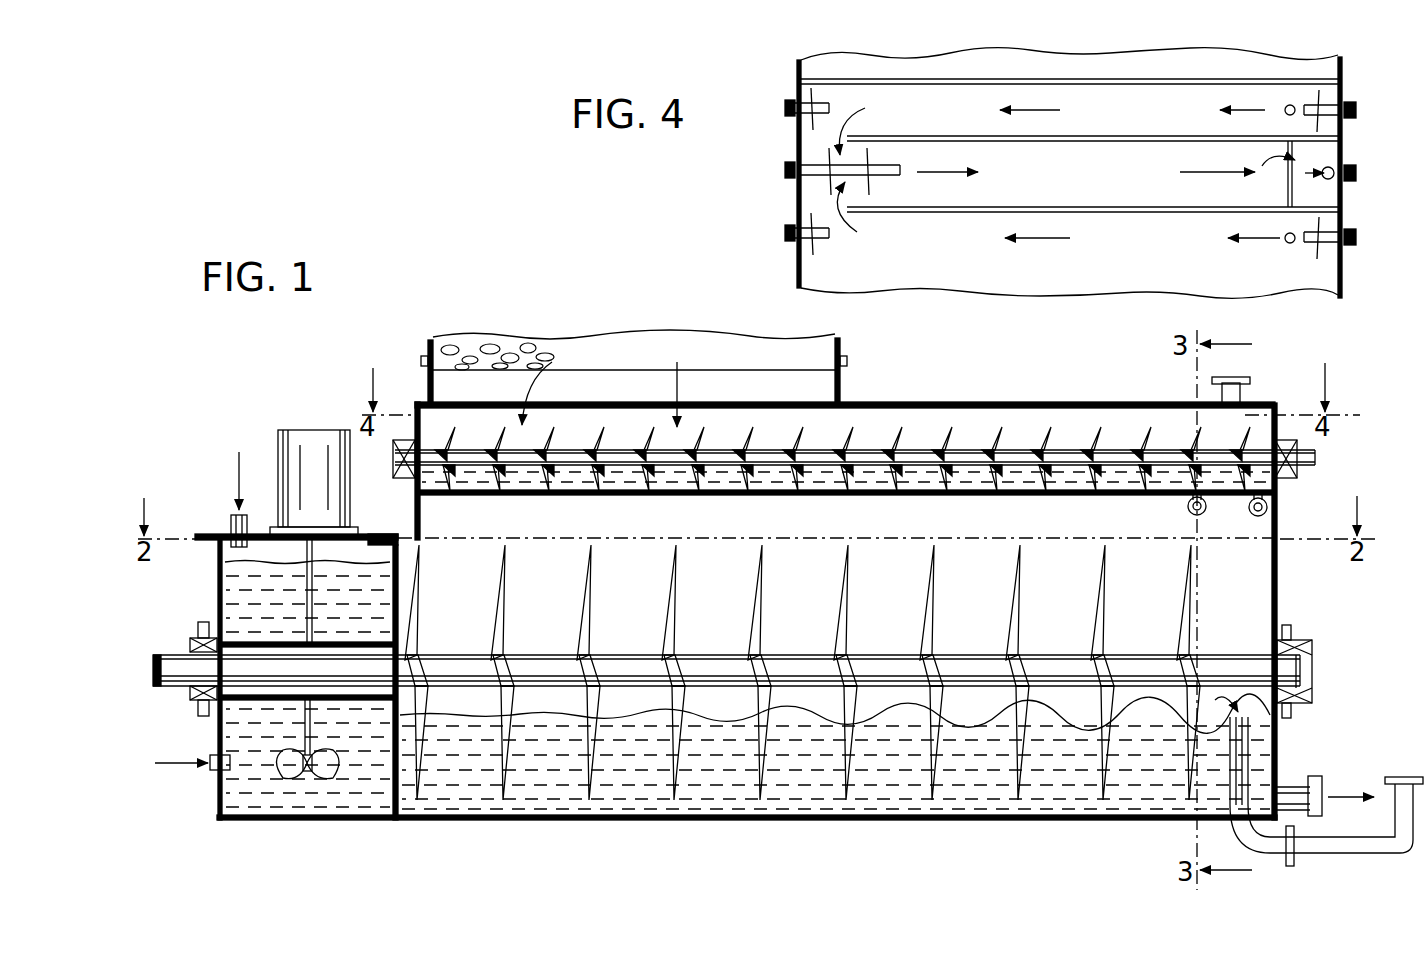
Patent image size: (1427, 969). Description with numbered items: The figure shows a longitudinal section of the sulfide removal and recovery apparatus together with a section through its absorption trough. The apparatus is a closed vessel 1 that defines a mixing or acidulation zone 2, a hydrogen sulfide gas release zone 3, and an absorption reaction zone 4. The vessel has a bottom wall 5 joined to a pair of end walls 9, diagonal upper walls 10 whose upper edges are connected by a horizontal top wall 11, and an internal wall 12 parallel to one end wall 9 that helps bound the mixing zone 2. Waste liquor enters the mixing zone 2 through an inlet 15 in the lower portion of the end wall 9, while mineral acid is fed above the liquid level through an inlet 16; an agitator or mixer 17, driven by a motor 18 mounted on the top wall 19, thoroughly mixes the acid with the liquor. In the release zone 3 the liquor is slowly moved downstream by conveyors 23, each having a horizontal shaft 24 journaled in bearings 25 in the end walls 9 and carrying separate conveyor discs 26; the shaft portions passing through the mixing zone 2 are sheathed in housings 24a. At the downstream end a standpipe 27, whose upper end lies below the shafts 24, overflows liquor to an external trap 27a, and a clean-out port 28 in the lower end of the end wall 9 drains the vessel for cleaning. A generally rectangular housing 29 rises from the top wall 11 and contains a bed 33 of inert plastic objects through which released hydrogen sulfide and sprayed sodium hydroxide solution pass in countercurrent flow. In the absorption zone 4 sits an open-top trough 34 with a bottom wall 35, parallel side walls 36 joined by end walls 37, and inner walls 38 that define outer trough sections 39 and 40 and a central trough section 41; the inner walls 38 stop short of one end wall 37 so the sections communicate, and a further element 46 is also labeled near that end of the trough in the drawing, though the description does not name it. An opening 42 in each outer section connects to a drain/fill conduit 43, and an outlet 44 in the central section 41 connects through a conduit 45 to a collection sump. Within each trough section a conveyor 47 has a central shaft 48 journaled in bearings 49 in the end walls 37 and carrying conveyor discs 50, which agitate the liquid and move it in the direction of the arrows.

In FIG. 1, the closed vessel 1 is at (1043, 401).
In FIG. 1, the mixing or acidulation zone 2 is at (245, 825).
In FIG. 1, the hydrogen sulfide gas release zone 3 is at (720, 795).
In FIG. 1, the absorption reaction zone 4 is at (975, 425).
In FIG. 1, the bottom wall 5 is at (848, 823).
In FIG. 1, the end walls 9 is at (218, 780).
In FIG. 1, the diagonal upper walls 10 is at (1110, 415).
In FIG. 1, the horizontal top wall 11 is at (882, 403).
In FIG. 1, the internal wall 12 is at (400, 805).
In FIG. 1, the inlet 15 is at (215, 757).
In FIG. 1, the inlet 16 is at (233, 518).
In FIG. 1, the agitator or mixer 17 is at (320, 770).
In FIG. 1, the motor 18 is at (305, 430).
In FIG. 1, the top wall 19 is at (395, 532).
In FIG. 1, the conveyors 23 is at (1100, 745).
In FIG. 1, the horizontal shaft 24 is at (1050, 658).
In FIG. 1, the housings 24a is at (255, 640).
In FIG. 1, the bearings 25 is at (197, 640).
In FIG. 1, the conveyor discs 26 is at (670, 615).
In FIG. 1, the standpipe 27 is at (1243, 748).
In FIG. 1, the trap 27a is at (1352, 855).
In FIG. 1, the clean-out port 28 is at (1318, 785).
In FIG. 1, the housing 29 is at (426, 351).
In FIG. 1, the bed 33 is at (525, 362).
In FIG. 4, the open-top trough 34 is at (1130, 76).
In FIG. 1, the open-top trough 34 is at (848, 496).
In FIG. 4, the bottom wall 35 is at (1175, 105).
In FIG. 1, the bottom wall 35 is at (727, 496).
In FIG. 4, the side walls 36 is at (1077, 80).
In FIG. 1, the side walls 36 is at (668, 478).
In FIG. 4, the end walls 37 is at (797, 130).
In FIG. 4, the inner walls 38 is at (1083, 141).
In FIG. 4, the outer trough section 39 is at (960, 97).
In FIG. 4, the outer trough section 40 is at (960, 240).
In FIG. 4, the central trough section 41 is at (955, 190).
In FIG. 4, the opening 42 is at (1295, 105).
In FIG. 1, the drain/fill conduit 43 is at (1188, 512).
In FIG. 4, the outlet 44 is at (1333, 179).
In FIG. 1, the conduit 45 is at (1268, 510).
In FIG. 4, the partition 46 is at (1272, 150).
In FIG. 1, the partition 46 is at (495, 447).
In FIG. 4, the conveyor 47 is at (880, 160).
In FIG. 1, the conveyor 47 is at (572, 480).
In FIG. 4, the central shaft 48 is at (830, 100).
In FIG. 1, the central shaft 48 is at (568, 455).
In FIG. 4, the bearings 49 is at (788, 102).
In FIG. 1, the bearings 49 is at (393, 462).
In FIG. 1, the conveyor discs 50 is at (892, 448).